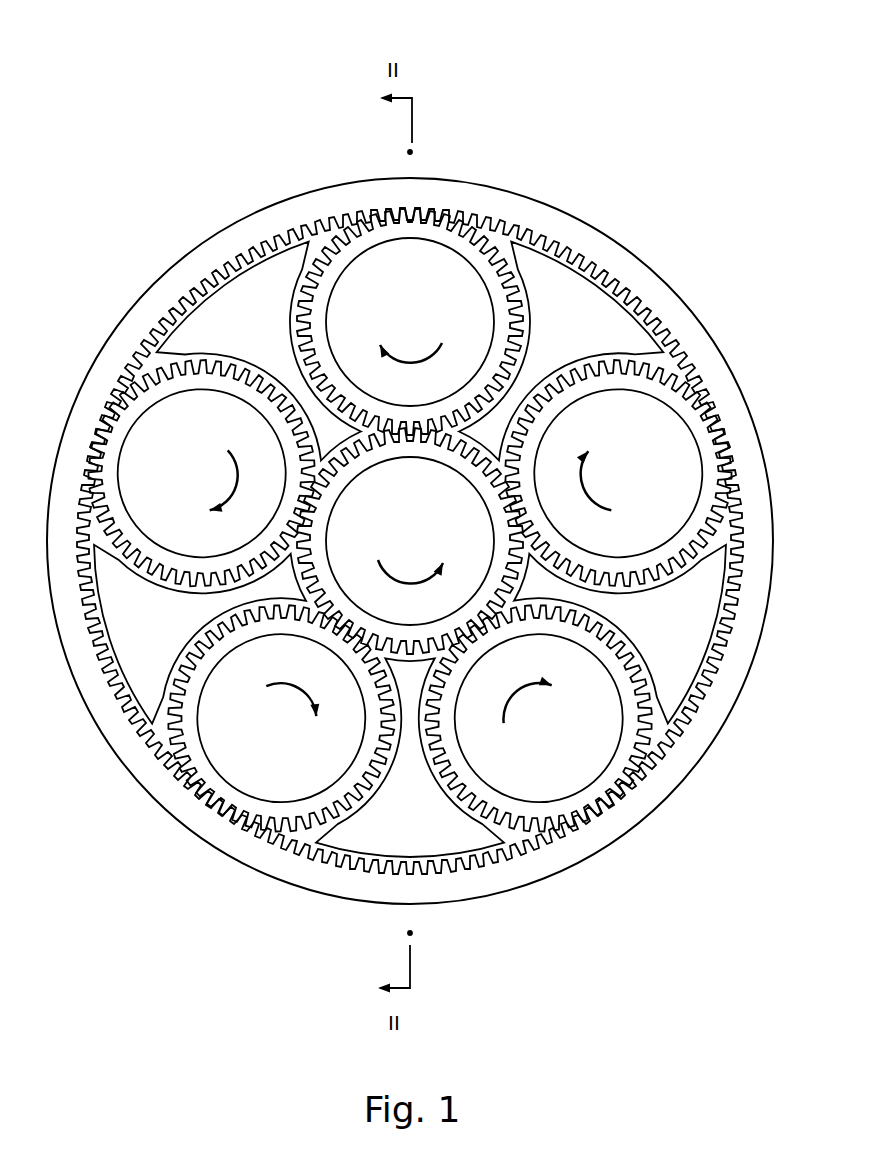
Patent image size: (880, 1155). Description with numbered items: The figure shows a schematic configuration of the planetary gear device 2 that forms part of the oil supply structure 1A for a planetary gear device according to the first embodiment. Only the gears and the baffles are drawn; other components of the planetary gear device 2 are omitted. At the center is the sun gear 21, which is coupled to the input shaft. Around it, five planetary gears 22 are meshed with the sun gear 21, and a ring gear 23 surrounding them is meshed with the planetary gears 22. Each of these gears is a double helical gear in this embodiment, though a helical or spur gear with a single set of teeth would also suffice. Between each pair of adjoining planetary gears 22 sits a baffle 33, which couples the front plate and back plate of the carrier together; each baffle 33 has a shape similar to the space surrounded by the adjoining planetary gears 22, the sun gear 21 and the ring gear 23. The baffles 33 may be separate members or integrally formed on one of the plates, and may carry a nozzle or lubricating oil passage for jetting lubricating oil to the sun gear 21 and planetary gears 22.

The oil supply structure 1A is at (490, 140).
The planetary gear device 2 is at (283, 192).
The sun gear 21 is at (412, 452).
The planetary gears 22 is at (408, 233).
The ring gear 23 is at (560, 230).
The baffles 33 is at (237, 312).